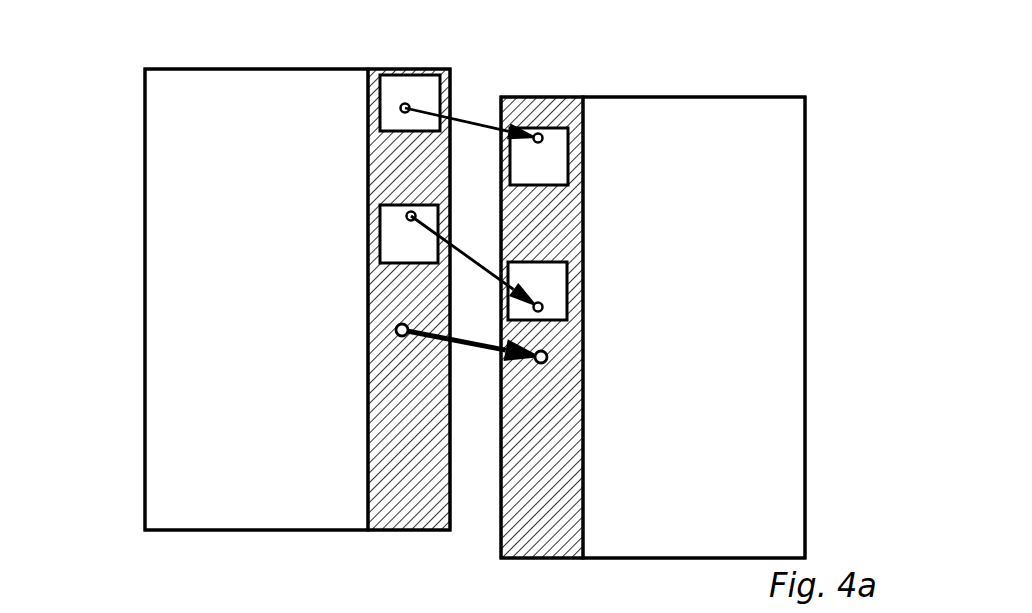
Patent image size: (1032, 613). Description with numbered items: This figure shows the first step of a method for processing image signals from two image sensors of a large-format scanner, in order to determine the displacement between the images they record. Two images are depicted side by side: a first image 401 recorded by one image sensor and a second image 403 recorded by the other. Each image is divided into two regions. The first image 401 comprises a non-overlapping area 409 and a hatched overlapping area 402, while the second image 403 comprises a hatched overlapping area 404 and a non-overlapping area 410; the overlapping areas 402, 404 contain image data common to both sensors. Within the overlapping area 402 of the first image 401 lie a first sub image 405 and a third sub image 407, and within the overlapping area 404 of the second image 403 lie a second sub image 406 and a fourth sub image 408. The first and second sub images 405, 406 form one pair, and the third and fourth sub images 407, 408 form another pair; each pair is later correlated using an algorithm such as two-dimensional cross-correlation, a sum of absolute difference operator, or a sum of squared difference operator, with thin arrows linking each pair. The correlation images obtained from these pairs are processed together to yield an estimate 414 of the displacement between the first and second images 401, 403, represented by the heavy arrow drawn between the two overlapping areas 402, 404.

The first image 401 is at (240, 277).
The non-overlapping area 409 is at (256, 277).
The overlapping area 402 is at (372, 277).
The second image 403 is at (708, 304).
The non-overlapping area 410 is at (694, 304).
The overlapping area 404 is at (565, 306).
The first sub image 405 is at (352, 103).
The third sub image 407 is at (351, 229).
The second sub image 406 is at (594, 150).
The fourth sub image 408 is at (593, 286).
The estimate of a displacement 414 is at (422, 393).